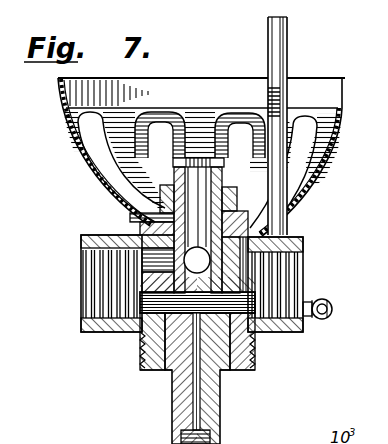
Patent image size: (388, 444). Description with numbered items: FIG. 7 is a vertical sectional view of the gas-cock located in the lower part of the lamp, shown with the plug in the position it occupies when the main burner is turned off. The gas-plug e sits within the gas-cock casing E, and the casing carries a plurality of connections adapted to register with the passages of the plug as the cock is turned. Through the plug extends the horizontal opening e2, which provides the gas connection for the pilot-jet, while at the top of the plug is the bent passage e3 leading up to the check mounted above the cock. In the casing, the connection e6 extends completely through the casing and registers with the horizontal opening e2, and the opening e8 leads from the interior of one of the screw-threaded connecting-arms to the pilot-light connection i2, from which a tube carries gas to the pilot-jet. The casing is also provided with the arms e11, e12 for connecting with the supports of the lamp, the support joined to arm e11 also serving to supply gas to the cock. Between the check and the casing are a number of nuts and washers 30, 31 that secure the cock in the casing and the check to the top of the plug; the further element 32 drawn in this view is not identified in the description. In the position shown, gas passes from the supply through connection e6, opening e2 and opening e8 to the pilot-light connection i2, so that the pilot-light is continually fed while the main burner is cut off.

The gas-cock casing E is at (138, 231).
The nuts and washers 31 is at (121, 167).
The slot in reflector 32 is at (175, 167).
The nuts and washers 30 is at (228, 183).
The pilot-light connection i2 is at (291, 78).
The gas-plug e is at (198, 225).
The bent passage e3 is at (197, 270).
The arm e12 is at (81, 331).
The opening e8 is at (257, 276).
The arm e11 is at (301, 334).
The connection e6 is at (141, 333).
The horizontal opening e2 is at (222, 370).